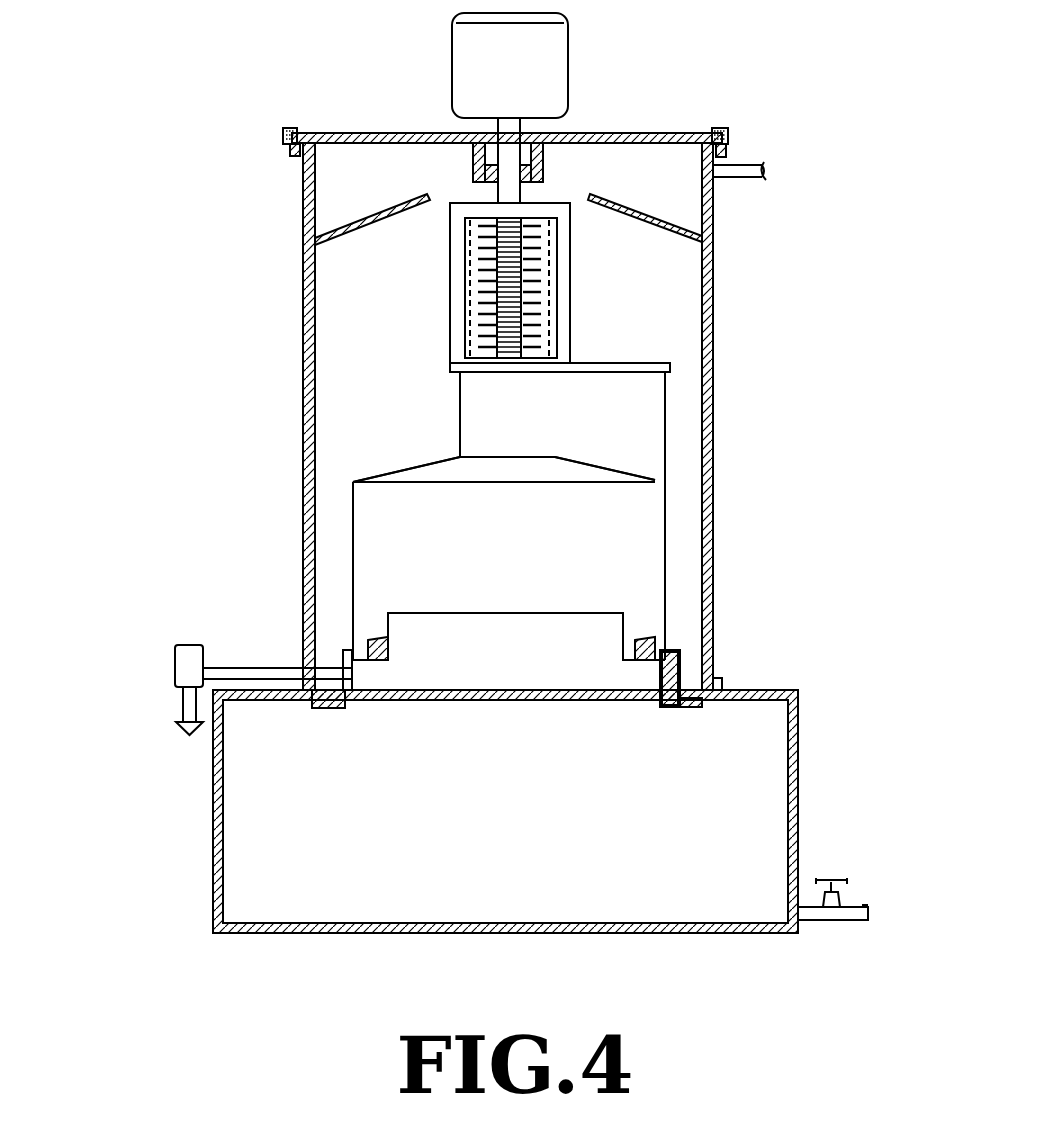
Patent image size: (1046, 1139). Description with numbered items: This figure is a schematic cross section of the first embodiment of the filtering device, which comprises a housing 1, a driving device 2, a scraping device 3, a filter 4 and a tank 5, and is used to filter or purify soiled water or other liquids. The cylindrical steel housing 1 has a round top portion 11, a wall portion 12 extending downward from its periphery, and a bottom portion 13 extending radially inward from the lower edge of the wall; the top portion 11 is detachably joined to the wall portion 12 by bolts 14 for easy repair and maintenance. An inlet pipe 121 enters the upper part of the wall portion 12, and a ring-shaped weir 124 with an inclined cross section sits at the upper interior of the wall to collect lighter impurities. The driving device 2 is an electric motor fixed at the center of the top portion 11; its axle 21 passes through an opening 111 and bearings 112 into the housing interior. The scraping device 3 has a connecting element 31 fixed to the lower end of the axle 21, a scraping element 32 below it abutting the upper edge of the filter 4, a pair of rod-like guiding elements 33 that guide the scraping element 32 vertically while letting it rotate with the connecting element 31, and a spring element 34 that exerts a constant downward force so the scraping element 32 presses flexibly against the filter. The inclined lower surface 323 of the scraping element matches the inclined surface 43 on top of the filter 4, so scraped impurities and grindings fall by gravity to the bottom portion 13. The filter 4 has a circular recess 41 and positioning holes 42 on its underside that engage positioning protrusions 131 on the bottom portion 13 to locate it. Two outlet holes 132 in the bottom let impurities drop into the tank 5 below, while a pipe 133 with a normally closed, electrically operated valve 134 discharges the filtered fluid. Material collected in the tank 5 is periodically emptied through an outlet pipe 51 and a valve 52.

The housing 1 is at (722, 490).
The driving device 2 is at (580, 45).
The scraping device 3 is at (594, 320).
The filter 4 is at (672, 572).
The tank 5 is at (824, 742).
The top portion 11 is at (337, 133).
The wall portion 12 is at (713, 300).
The bottom portion 13 is at (673, 683).
The bolts 14 is at (722, 130).
The axle 21 is at (512, 128).
The connecting element 31 is at (568, 272).
The scraping element 32 is at (488, 400).
The guiding elements 33 is at (462, 305).
The spring element 34 is at (560, 342).
The circular recess 41 is at (535, 650).
The positioning holes 42 is at (650, 640).
The inclined surface 43 is at (607, 467).
The outlet pipe 51 is at (860, 905).
The valve 52 is at (840, 895).
The opening 111 is at (478, 136).
The bearings 112 is at (545, 162).
The inlet pipe 121 is at (742, 177).
The weir 124 is at (384, 210).
The positioning protrusions 131 is at (642, 638).
The outlet holes 132 is at (685, 708).
The pipe 133 is at (250, 668).
The valve 134 is at (175, 658).
The inclined lower surface 323 is at (613, 470).